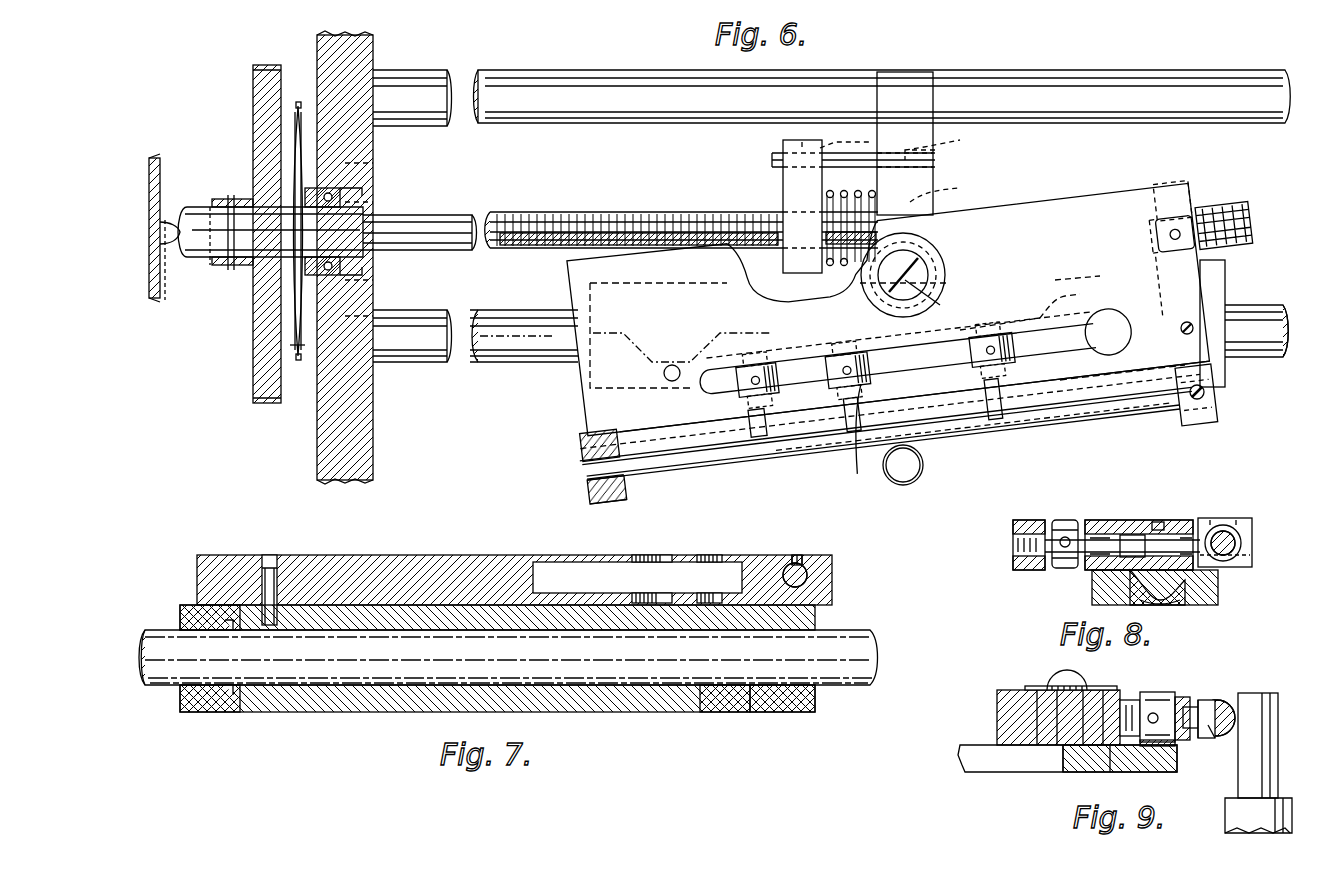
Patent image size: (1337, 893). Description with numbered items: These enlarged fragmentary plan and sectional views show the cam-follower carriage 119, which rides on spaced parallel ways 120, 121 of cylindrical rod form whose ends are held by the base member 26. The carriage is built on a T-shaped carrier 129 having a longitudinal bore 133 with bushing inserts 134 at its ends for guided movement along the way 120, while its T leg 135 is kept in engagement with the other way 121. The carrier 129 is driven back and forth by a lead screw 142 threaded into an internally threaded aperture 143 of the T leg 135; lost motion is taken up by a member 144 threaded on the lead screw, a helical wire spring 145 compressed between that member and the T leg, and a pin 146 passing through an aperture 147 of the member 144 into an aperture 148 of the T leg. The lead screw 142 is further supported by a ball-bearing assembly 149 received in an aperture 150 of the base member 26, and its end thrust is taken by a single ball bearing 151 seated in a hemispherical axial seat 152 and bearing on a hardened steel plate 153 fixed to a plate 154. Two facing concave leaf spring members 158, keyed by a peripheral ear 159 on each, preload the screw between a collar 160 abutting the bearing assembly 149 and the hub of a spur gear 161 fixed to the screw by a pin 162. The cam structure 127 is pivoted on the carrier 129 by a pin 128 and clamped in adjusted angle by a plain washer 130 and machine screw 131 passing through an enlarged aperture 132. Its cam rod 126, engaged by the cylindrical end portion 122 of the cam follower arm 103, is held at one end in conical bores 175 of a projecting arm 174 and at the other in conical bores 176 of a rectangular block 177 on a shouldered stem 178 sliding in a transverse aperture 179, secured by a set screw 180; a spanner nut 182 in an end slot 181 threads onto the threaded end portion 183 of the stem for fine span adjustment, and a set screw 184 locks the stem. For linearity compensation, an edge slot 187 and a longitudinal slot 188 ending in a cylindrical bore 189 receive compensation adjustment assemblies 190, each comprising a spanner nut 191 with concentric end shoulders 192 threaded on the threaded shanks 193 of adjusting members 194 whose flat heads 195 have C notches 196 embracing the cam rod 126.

In FIG. 6, the base member 26 is at (362, 413).
In FIG. 9, the cam follower arm 103 is at (1285, 815).
In FIG. 6, the carriage 119 is at (560, 416).
In FIG. 6, the way 120 is at (1265, 305).
In FIG. 7, the way 120 is at (848, 632).
In FIG. 8, the way 120 is at (1170, 604).
In FIG. 6, the way 121 is at (1150, 70).
In FIG. 6, the cylindrical end portion 122 is at (905, 478).
In FIG. 9, the cylindrical end portion 122 is at (1278, 736).
In FIG. 6, the cam rod 126 is at (1085, 420).
In FIG. 8, the cam rod 126 is at (1235, 538).
In FIG. 9, the cam rod 126 is at (1230, 705).
In FIG. 6, the cam structure 127 is at (578, 428).
In FIG. 7, the cam structure 127 is at (445, 538).
In FIG. 8, the cam structure 127 is at (1098, 520).
In FIG. 9, the cam structure 127 is at (1032, 711).
In FIG. 6, the pin 128 is at (668, 380).
In FIG. 7, the pin 128 is at (270, 555).
In FIG. 6, the carrier 129 is at (590, 292).
In FIG. 7, the carrier 129 is at (340, 605).
In FIG. 8, the carrier 129 is at (1218, 583).
In FIG. 9, the carrier 129 is at (975, 772).
In FIG. 6, the plain washer 130 is at (930, 257).
In FIG. 9, the plain washer 130 is at (1100, 690).
In FIG. 6, the machine screw 131 is at (945, 298).
In FIG. 9, the machine screw 131 is at (1052, 676).
In FIG. 6, the enlarged aperture 132 is at (930, 284).
In FIG. 9, the enlarged aperture 132 is at (996, 690).
In FIG. 7, the longitudinal bore 133 is at (665, 712).
In FIG. 7, the bushing inserts 134 is at (210, 712).
In FIG. 8, the bushing inserts 134 is at (1145, 588).
In FIG. 6, the T leg 135 is at (915, 180).
In FIG. 6, the lead screw 142 is at (585, 212).
In FIG. 6, the threaded aperture 143 is at (949, 189).
In FIG. 6, the member 144 is at (783, 185).
In FIG. 6, the helical wire spring 145 is at (870, 194).
In FIG. 6, the pin 146 is at (772, 160).
In FIG. 6, the aperture 147 is at (845, 137).
In FIG. 6, the aperture 148 is at (947, 144).
In FIG. 6, the ball-bearing assembly 149 is at (345, 186).
In FIG. 6, the aperture 150 is at (340, 197).
In FIG. 6, the ball bearing 151 is at (168, 250).
In FIG. 6, the hemispherical axial seat 152 is at (222, 268).
In FIG. 6, the hardened steel plate 153 is at (170, 222).
In FIG. 6, the plate 154 is at (160, 162).
In FIG. 6, the concave leaf spring members 158 is at (292, 344).
In FIG. 6, the peripheral ear 159 is at (300, 106).
In FIG. 6, the collar 160 is at (340, 282).
In FIG. 6, the spur gear 161 is at (255, 102).
In FIG. 6, the pin 162 is at (231, 195).
In FIG. 6, the projecting arm 174 is at (598, 498).
In FIG. 6, the conical bores 175 is at (585, 486).
In FIG. 6, the conical bores 176 is at (1166, 418).
In FIG. 8, the conical bores 176 is at (1238, 555).
In FIG. 6, the rectangular block 177 is at (1208, 420).
In FIG. 8, the rectangular block 177 is at (1245, 518).
In FIG. 6, the shouldered stem 178 is at (1208, 292).
In FIG. 7, the shouldered stem 178 is at (808, 573).
In FIG. 8, the shouldered stem 178 is at (1135, 532).
In FIG. 6, the transverse aperture 179 is at (1140, 270).
In FIG. 6, the set screw 180 is at (1205, 393).
In FIG. 8, the set screw 180 is at (1226, 518).
In FIG. 6, the end slot 181 is at (1150, 228).
In FIG. 6, the spanner nut 182 is at (1195, 222).
In FIG. 8, the spanner nut 182 is at (1065, 520).
In FIG. 6, the threaded end portion 183 is at (1195, 192).
In FIG. 8, the threaded end portion 183 is at (1026, 520).
In FIG. 6, the set screw 184 is at (1181, 328).
In FIG. 7, the set screw 184 is at (800, 556).
In FIG. 8, the set screw 184 is at (1160, 520).
In FIG. 6, the edge slot 187 is at (1020, 306).
In FIG. 7, the edge slot 187 is at (600, 568).
In FIG. 9, the edge slot 187 is at (1100, 768).
In FIG. 6, the longitudinal slot 188 is at (905, 360).
In FIG. 7, the longitudinal slot 188 is at (680, 558).
In FIG. 6, the cylindrical bore 189 is at (1110, 311).
In FIG. 6, the compensation adjustment assemblies 190 is at (765, 347).
In FIG. 6, the spanner nut 191 is at (848, 385).
In FIG. 9, the spanner nut 191 is at (1165, 692).
In FIG. 9, the concentric end shoulders 192 is at (1190, 697).
In FIG. 9, the threaded shanks 193 is at (1130, 700).
In FIG. 9, the adjusting members 194 is at (1192, 730).
In FIG. 6, the flat heads 195 is at (745, 430).
In FIG. 9, the flat heads 195 is at (1225, 700).
In FIG. 9, the C notches 196 is at (1215, 740).